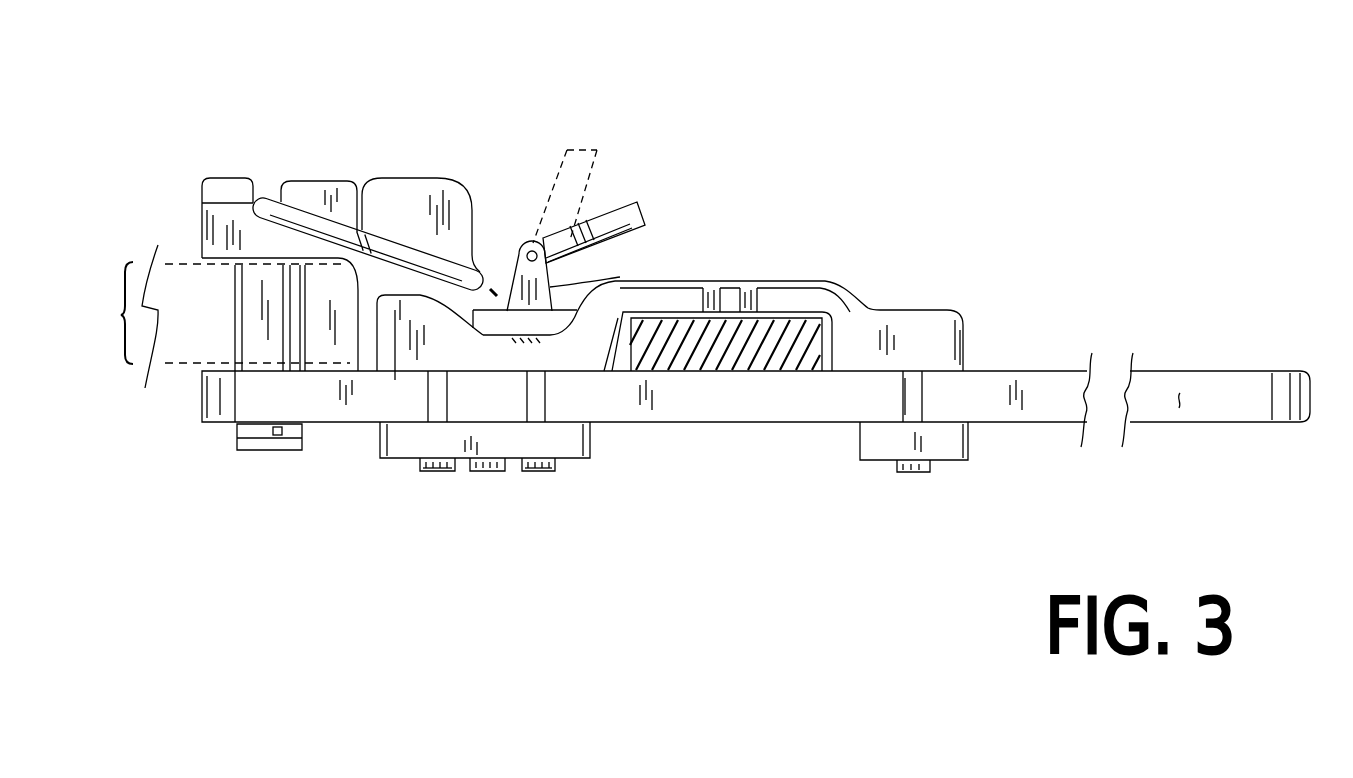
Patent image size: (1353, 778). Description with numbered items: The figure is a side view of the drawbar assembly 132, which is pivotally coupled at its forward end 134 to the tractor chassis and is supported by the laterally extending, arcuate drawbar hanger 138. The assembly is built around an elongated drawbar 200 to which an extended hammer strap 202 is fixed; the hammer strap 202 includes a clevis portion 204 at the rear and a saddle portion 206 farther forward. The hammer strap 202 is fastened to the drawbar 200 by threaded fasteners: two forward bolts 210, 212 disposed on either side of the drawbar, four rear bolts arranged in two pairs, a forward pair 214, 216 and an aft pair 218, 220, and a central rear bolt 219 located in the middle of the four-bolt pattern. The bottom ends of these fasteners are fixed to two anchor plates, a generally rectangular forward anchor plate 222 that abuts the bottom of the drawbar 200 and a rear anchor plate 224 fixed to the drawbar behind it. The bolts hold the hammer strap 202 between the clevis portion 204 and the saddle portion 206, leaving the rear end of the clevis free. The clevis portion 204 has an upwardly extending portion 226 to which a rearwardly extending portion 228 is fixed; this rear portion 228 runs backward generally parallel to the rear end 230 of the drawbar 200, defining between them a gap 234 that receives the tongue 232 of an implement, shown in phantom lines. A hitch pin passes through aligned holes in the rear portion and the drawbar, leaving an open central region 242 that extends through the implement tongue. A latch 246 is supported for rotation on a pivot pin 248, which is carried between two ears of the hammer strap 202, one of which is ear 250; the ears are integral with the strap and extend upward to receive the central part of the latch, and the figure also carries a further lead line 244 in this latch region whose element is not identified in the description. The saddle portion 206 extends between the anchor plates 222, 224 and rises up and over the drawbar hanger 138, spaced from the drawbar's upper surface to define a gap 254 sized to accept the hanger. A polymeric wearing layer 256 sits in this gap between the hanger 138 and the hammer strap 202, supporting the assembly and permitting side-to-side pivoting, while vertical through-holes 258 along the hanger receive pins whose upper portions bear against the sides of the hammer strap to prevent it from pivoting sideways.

The drawbar assembly 132 is at (1010, 134).
The forward end 134 is at (1180, 422).
The drawbar hangar 138 is at (735, 345).
The drawbar 200 is at (1207, 371).
The hammer strap 202 is at (700, 281).
The clevis portion 204 is at (300, 120).
The saddle portion 206 is at (781, 141).
The forward bolt 210 is at (922, 473).
The forward bolt 212 is at (871, 506).
The rear bolt 214 is at (550, 473).
The rear bolt 216 is at (597, 519).
The rear bolt 218 is at (437, 473).
The central rear bolt 219 is at (482, 473).
The rear bolt 220 is at (392, 553).
The forward anchor plate 222 is at (970, 445).
The rear anchor plate 224 is at (380, 445).
The upwardly extending portion 226 is at (525, 243).
The rearwardly extending portion 228 is at (238, 210).
The rear end 230 is at (200, 408).
The tongue 232 is at (338, 298).
The gap 234 is at (203, 316).
The open central region 242 is at (258, 335).
The linkage 244 is at (425, 295).
The latch 246 is at (620, 197).
The pivot pin 248 is at (623, 230).
The ear 250 is at (590, 277).
The gap 254 is at (843, 362).
The polymeric wearing layer 256 is at (815, 330).
The vertical through-holes 258 is at (835, 300).